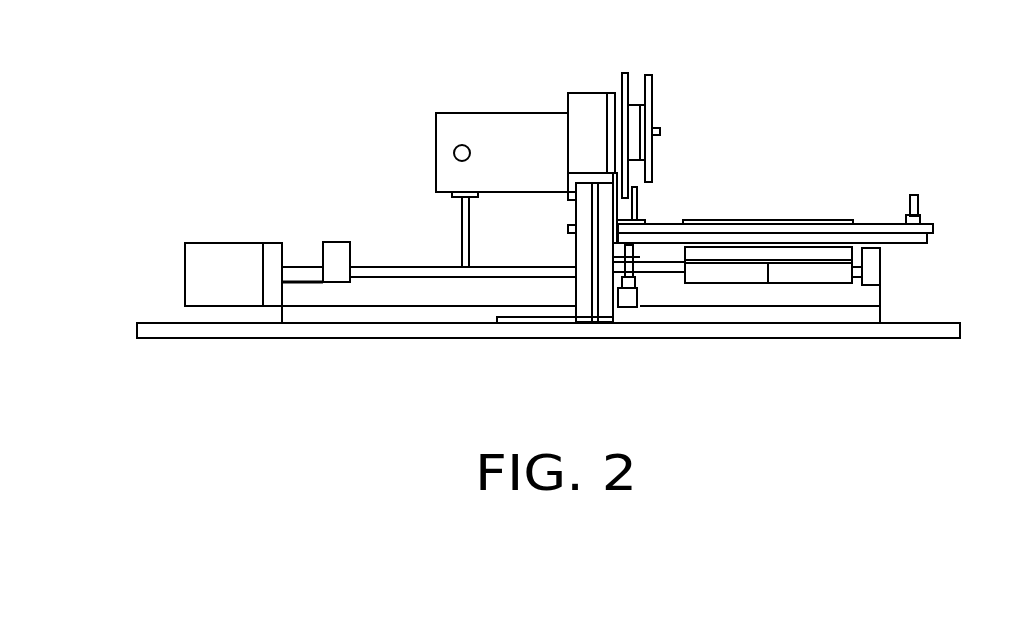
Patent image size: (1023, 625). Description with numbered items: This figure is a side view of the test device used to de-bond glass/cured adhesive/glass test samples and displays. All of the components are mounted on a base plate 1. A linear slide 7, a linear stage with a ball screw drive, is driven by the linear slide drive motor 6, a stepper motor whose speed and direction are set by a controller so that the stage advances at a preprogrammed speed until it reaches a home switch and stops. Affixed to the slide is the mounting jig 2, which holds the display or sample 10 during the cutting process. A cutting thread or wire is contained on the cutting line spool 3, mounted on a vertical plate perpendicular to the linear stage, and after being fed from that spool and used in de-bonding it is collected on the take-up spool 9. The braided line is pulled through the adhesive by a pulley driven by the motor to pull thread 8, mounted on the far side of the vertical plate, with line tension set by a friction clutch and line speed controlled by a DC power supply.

The base plate 1 is at (787, 340).
The mounting jig 2 is at (933, 228).
The cutting line spool 3 is at (654, 78).
The linear slide drive motor 6 is at (200, 243).
The linear slide 7 is at (330, 243).
The motor to pull thread 8 is at (445, 113).
The take-up spool 9 is at (632, 132).
The display or sample 10 is at (778, 220).